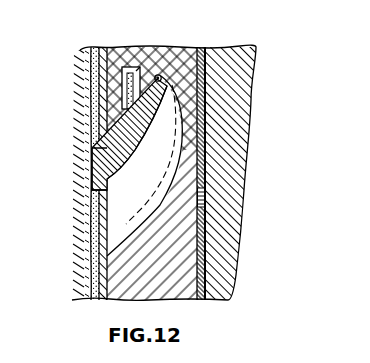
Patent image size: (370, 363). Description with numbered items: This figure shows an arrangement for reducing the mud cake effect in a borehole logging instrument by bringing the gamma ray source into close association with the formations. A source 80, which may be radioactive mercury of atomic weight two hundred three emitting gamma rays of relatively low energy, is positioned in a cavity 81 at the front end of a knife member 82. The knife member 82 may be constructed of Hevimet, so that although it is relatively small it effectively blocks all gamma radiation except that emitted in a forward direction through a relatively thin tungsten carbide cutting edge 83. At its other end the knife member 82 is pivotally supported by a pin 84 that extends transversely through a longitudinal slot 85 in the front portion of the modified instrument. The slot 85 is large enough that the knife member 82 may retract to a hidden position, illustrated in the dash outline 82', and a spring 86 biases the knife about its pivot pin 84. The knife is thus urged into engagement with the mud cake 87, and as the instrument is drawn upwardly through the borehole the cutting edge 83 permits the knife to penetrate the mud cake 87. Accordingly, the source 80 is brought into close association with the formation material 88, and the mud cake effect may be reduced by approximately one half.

The source 80 is at (110, 175).
The cavity 81 is at (97, 152).
The knife member 82 is at (137, 134).
The dash outline 82' is at (235, 197).
The cutting edge 83 is at (93, 163).
The pin 84 is at (200, 47).
The longitudinal slot 85 is at (225, 90).
The spring 86 is at (161, 75).
The mud cake 87 is at (88, 47).
The formation material 88 is at (90, 72).